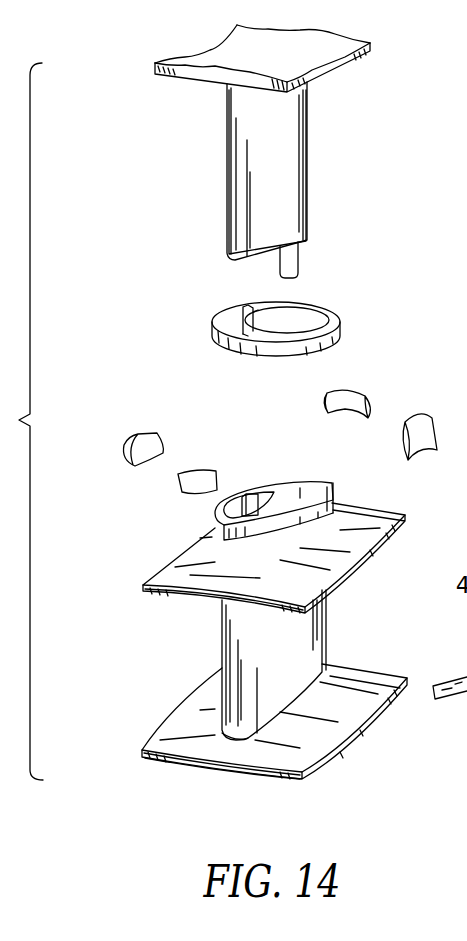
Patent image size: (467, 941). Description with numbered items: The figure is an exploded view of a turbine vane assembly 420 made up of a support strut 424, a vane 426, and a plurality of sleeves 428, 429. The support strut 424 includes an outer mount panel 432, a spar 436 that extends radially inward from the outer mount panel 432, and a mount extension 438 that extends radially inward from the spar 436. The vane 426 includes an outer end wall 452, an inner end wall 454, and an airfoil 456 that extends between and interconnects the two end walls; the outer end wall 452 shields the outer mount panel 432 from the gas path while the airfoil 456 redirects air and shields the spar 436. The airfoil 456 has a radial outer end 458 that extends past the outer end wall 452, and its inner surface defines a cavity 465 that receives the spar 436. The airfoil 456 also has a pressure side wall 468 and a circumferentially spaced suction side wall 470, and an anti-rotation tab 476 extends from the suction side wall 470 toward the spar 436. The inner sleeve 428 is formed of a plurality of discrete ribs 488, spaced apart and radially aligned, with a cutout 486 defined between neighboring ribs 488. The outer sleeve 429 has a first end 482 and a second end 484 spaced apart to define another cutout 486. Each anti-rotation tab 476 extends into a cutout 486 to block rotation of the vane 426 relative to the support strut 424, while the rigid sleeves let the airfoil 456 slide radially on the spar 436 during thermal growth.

The turbine vane assembly 420 is at (122, 66).
The support strut 424 is at (210, 168).
The vane 426 is at (175, 763).
The inner sleeve 428 is at (143, 484).
The outer sleeve 429 is at (212, 352).
The outer mount panel 432 is at (333, 72).
The spar 436 is at (310, 160).
The mount extension 438 is at (300, 258).
The outer end wall 452 is at (320, 568).
The inner end wall 454 is at (350, 696).
The airfoil 456 is at (222, 647).
The radial outer end 458 is at (338, 493).
The cavity 465 is at (275, 486).
The pressure side wall 468 is at (290, 633).
The suction side wall 470 is at (222, 655).
The anti-rotation tab 476 is at (271, 495).
The first end 482 is at (244, 332).
The second end 484 is at (251, 310).
The cutout 486 is at (245, 340).
The ribs 488 is at (137, 433).